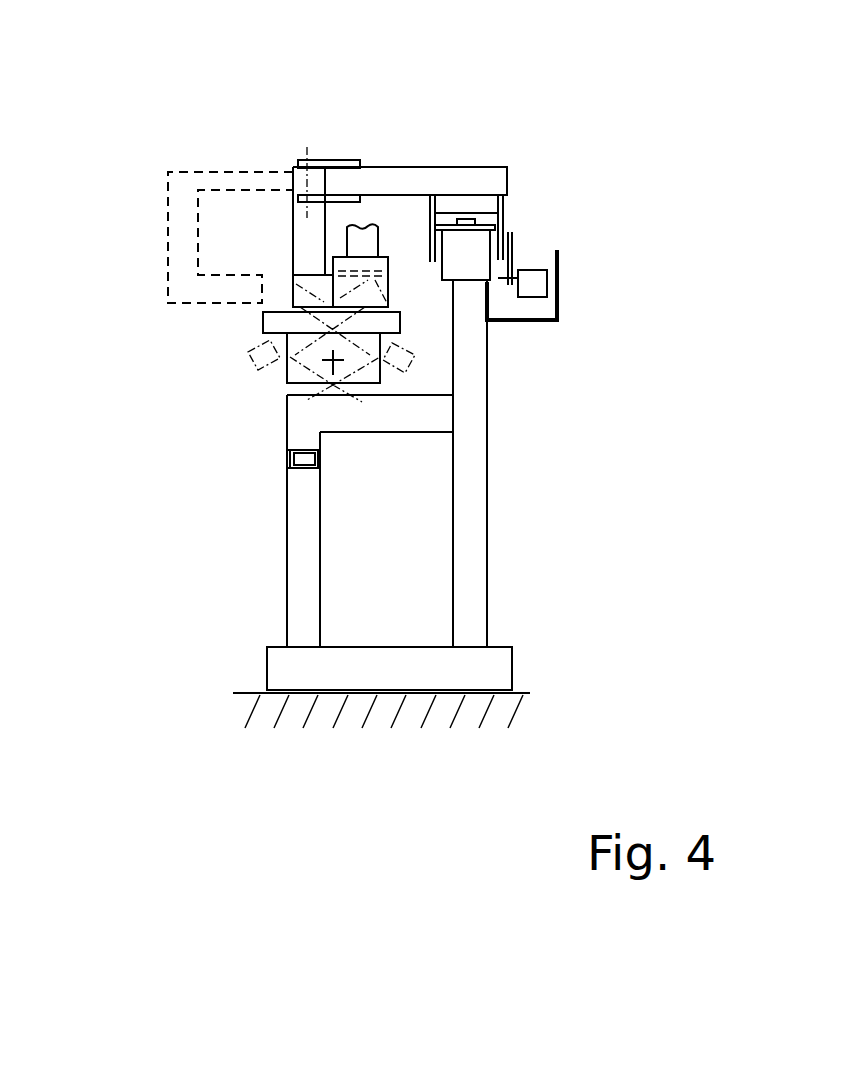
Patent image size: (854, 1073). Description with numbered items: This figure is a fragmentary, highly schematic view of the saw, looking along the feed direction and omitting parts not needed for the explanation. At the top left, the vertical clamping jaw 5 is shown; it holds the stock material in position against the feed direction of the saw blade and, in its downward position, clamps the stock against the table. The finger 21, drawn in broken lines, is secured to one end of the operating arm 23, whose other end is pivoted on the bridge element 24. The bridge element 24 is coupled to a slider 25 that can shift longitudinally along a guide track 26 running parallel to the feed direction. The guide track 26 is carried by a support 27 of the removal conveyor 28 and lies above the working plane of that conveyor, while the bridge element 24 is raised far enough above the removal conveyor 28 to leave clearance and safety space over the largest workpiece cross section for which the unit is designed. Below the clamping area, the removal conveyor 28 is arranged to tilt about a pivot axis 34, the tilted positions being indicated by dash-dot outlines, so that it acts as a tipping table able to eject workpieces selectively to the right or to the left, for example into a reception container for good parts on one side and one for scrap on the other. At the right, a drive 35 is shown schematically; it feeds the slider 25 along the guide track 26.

The vertical clamping jaw 5 is at (388, 290).
The finger 21 is at (203, 292).
The operating arm 23 is at (232, 178).
The bridge element 24 is at (378, 185).
The slider 25 is at (505, 207).
The guide track 26 is at (494, 222).
The support 27 is at (305, 594).
The removal conveyor 28 is at (248, 358).
The pivot axis 34 is at (335, 385).
The drive 35 is at (540, 290).